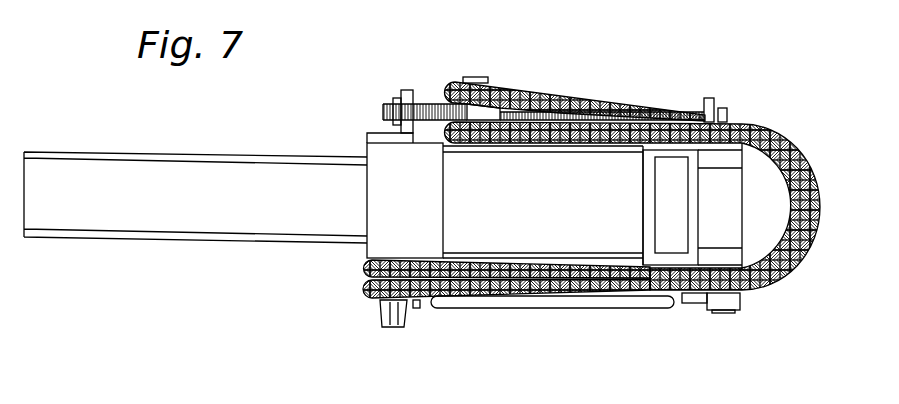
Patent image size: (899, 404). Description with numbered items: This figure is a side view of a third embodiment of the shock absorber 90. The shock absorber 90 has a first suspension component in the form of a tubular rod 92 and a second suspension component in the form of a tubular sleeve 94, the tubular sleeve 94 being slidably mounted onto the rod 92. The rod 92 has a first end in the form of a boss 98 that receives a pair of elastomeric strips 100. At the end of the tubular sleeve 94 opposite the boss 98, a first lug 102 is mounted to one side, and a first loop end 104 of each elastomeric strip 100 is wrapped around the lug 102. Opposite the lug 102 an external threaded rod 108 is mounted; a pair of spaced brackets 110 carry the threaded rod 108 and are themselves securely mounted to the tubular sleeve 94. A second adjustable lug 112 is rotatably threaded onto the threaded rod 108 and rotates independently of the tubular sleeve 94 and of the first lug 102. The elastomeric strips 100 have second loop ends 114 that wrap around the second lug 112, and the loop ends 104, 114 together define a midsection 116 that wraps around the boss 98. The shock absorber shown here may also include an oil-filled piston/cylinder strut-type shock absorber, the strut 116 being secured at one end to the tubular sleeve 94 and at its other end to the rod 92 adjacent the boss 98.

The shock absorber 90 is at (341, 134).
The tubular rod 92 is at (88, 157).
The tubular sleeve 94 is at (480, 255).
The first end (boss) 98 is at (790, 238).
The elastomeric strips 100 is at (523, 287).
The first lug 102 is at (390, 328).
The first loop end 104 is at (362, 288).
The external threaded rod 108 is at (690, 112).
The brackets 110 is at (400, 90).
The second adjustable lug 112 is at (490, 110).
The second loop ends 114 is at (443, 92).
The midsection / strut 116 is at (804, 153).